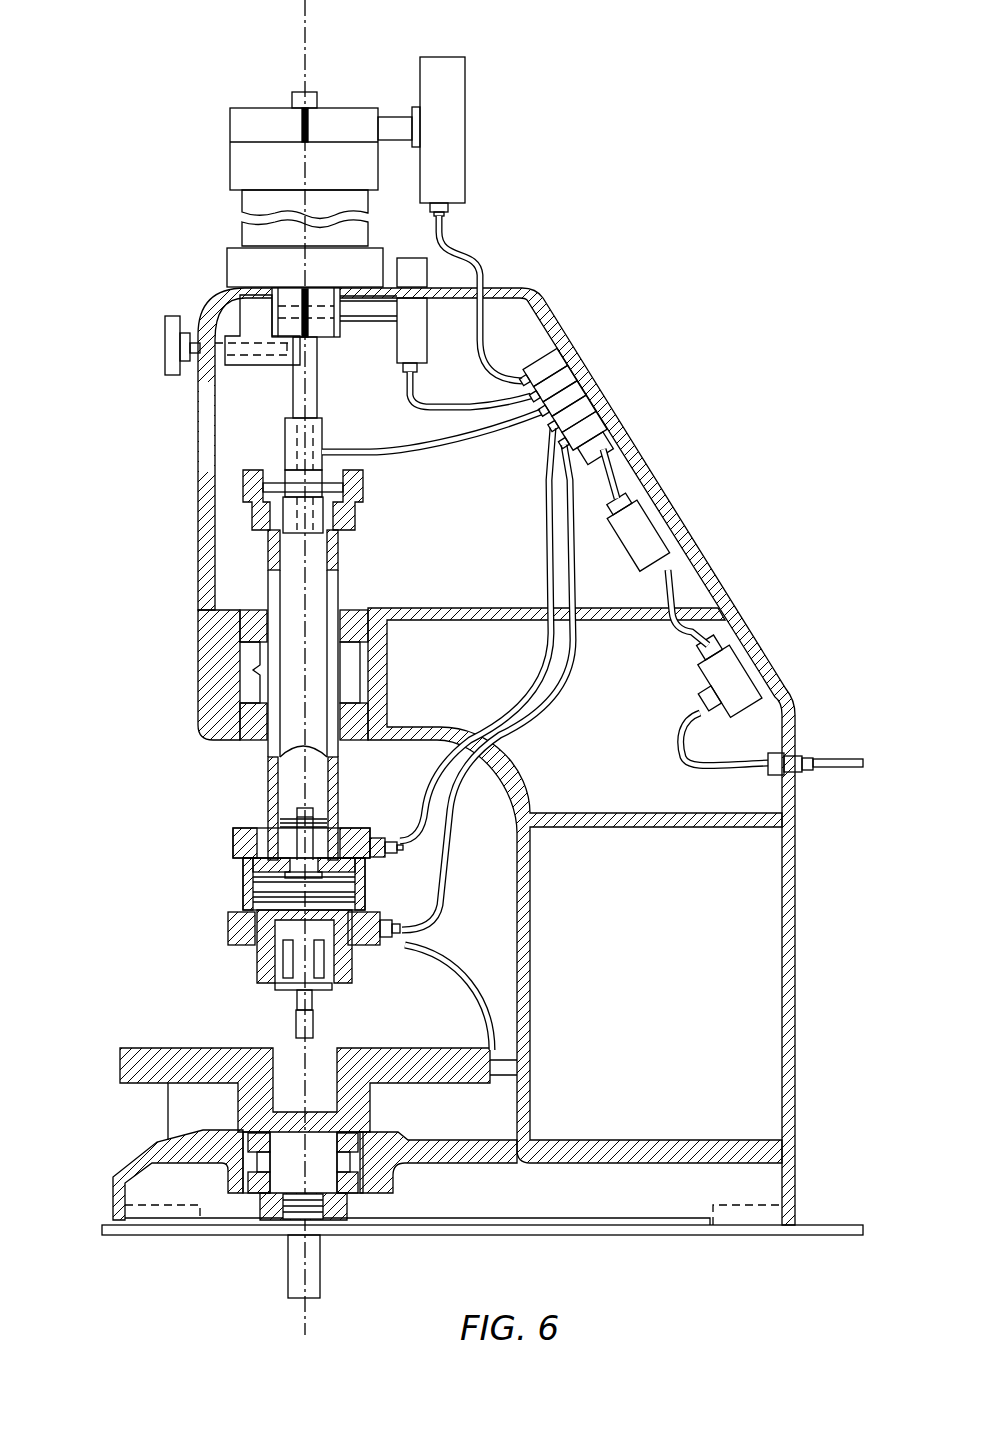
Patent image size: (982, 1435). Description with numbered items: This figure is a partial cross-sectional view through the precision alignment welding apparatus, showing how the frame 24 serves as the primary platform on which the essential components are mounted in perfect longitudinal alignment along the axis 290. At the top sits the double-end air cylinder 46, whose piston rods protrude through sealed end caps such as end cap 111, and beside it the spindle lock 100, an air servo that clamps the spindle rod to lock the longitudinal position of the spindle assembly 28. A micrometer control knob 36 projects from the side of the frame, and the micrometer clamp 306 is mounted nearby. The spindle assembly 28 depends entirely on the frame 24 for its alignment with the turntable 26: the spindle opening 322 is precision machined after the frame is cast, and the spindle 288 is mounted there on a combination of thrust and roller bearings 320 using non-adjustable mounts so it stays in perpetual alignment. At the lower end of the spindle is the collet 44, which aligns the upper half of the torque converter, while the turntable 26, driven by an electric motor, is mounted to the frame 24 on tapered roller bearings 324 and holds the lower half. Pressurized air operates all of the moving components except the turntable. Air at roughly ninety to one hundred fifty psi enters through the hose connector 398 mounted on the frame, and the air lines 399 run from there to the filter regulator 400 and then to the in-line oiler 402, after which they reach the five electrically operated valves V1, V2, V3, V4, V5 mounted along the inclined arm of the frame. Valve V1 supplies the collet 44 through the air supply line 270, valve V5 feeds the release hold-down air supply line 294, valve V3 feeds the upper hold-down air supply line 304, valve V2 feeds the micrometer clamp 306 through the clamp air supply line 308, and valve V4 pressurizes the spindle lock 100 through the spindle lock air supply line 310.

The axis 290 is at (312, 46).
The spindle lock 100 is at (467, 101).
The double-end air cylinder 46 is at (240, 203).
The end cap 111 is at (228, 270).
The micrometer control knob 36 is at (165, 338).
The spindle lock air supply line 310 is at (467, 252).
The micrometer clamp 306 is at (428, 275).
The clamp air supply line 308 is at (422, 411).
The upper hold-down air supply line 304 is at (400, 460).
The valve V1 is at (600, 445).
The valve V2 is at (553, 387).
The valve V3 is at (568, 407).
The valve V4 is at (547, 367).
The valve V5 is at (583, 423).
The in-line oiler 402 is at (648, 535).
The filter regulator 400 is at (745, 680).
The hose connector 398 is at (800, 760).
The air lines 399 is at (668, 738).
The thrust and roller bearings 320 is at (262, 742).
The spindle opening 322 is at (255, 670).
The release hold-down air supply line 294 is at (517, 675).
The air supply line 270 is at (522, 716).
The spindle assembly 28 is at (245, 795).
The spindle 288 is at (268, 830).
The collet 44 is at (250, 995).
The turntable 26 is at (120, 1052).
The frame 24 is at (795, 1027).
The tapered roller bearings 324 is at (262, 1172).